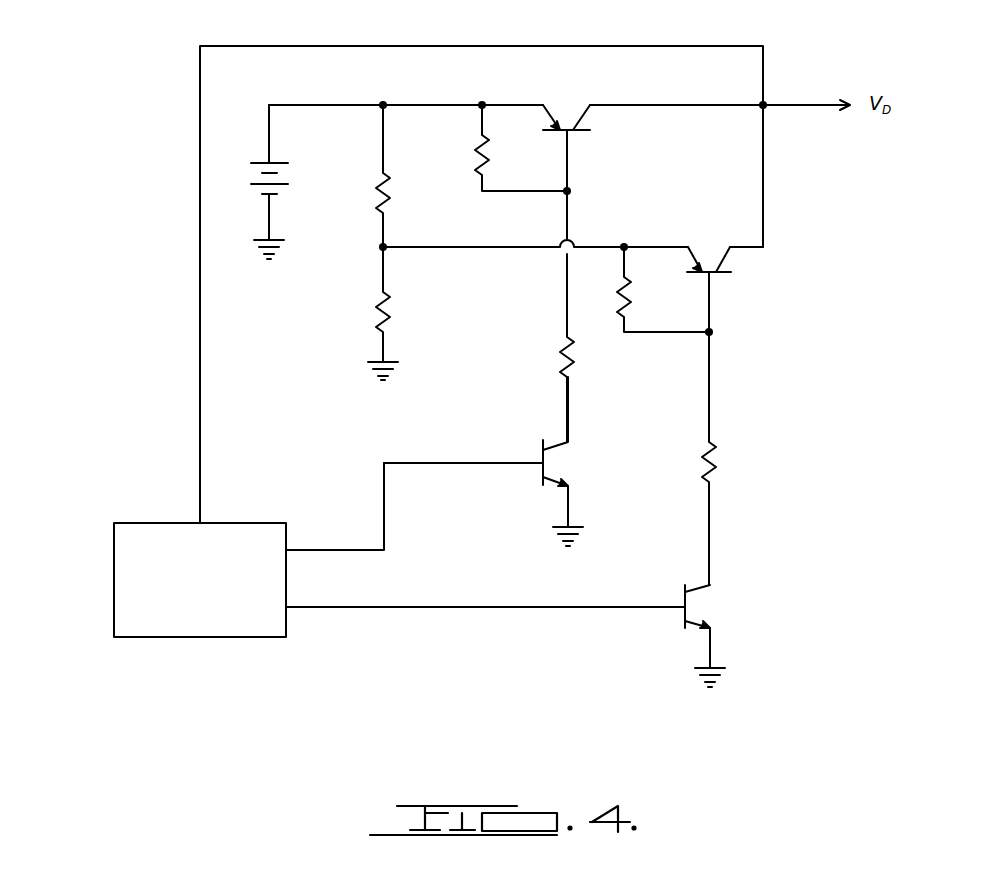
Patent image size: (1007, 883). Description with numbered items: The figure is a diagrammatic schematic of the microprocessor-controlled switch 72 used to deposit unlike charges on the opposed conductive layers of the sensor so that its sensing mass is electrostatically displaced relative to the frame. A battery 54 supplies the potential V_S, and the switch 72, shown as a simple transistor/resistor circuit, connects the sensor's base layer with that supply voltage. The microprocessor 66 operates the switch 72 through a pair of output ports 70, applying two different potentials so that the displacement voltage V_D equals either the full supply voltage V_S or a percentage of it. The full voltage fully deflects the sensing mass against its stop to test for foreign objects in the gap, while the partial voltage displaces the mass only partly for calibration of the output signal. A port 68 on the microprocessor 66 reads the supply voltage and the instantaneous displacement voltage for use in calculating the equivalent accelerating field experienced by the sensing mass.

The battery 54 is at (258, 162).
The microprocessor 66 is at (110, 583).
The analog-to-digital converter ports 68 is at (198, 521).
The output ports 70 is at (287, 549).
The switch 72 is at (783, 566).